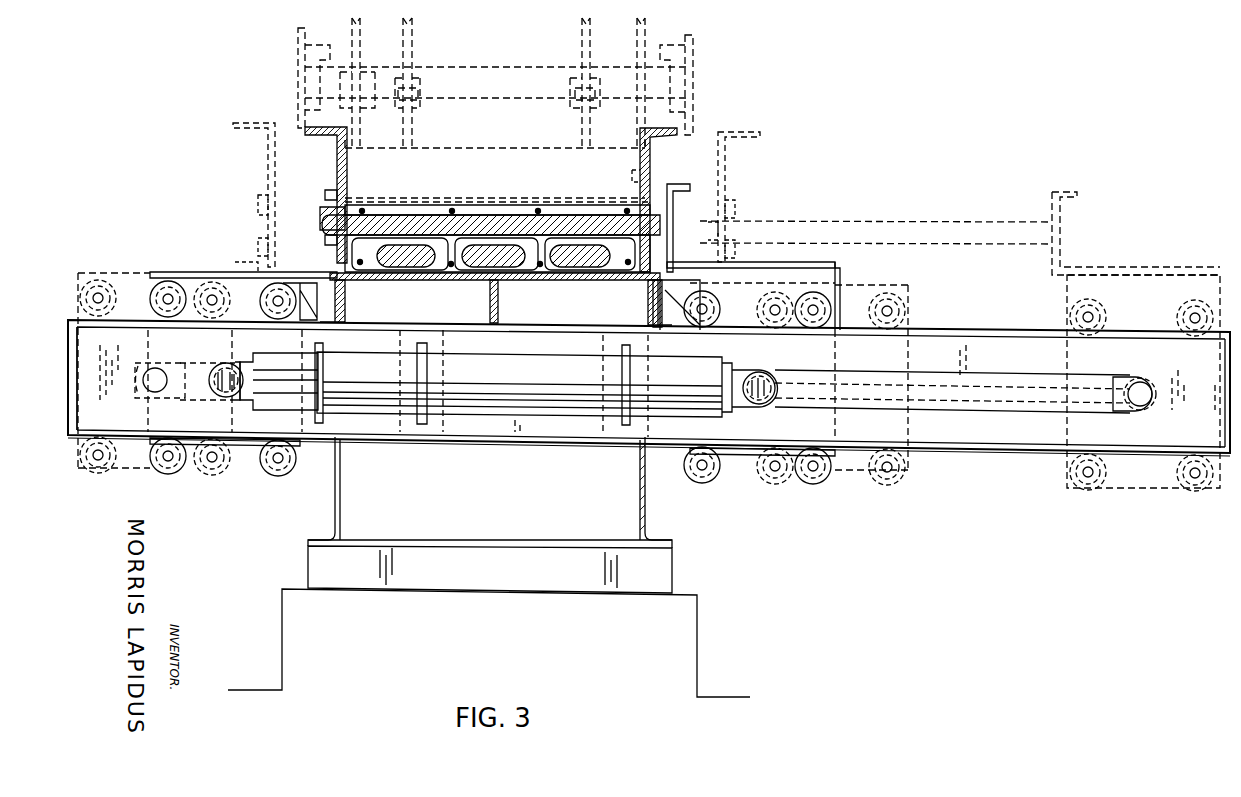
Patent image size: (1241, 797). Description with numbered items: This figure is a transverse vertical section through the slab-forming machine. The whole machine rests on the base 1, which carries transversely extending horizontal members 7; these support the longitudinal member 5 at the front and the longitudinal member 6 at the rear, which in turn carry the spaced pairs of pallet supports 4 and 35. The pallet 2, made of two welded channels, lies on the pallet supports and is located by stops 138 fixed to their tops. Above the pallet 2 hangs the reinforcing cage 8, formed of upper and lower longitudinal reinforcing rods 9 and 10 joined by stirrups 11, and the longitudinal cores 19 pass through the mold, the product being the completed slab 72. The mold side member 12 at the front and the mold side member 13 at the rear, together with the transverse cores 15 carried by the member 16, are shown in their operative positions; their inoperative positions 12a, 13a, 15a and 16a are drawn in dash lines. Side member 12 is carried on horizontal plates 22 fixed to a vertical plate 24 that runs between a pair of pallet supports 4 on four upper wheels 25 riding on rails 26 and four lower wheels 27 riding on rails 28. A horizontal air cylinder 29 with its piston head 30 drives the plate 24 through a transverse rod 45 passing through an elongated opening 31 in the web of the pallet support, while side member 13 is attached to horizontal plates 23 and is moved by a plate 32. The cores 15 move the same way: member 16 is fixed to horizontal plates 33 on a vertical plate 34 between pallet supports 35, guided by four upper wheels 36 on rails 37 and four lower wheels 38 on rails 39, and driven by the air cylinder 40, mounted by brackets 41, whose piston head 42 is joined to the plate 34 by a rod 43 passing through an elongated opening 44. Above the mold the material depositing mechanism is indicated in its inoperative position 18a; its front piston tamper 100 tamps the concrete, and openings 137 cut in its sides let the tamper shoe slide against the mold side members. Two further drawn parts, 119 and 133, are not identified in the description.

The base 1 is at (282, 642).
The pallet 2 is at (338, 303).
The pallet supports 4 is at (95, 430).
The longitudinally extending member 5 is at (335, 498).
The longitudinally extending member 6 is at (648, 505).
The transversely extending members 7 is at (310, 561).
The reinforcing cage 8 is at (412, 280).
The upper reinforcing rods 9 is at (452, 213).
The lower reinforcing rods 10 is at (465, 262).
The stirrups 11 is at (530, 262).
The mold side member 12 is at (337, 143).
The inoperative position of mold side member 12a is at (266, 143).
The mold side member 13 is at (652, 150).
The inoperative position of mold side member 13a is at (727, 153).
The transversely extending cores 15 is at (326, 213).
The inoperative position of cores 15a is at (912, 221).
The core-carrying member 16 is at (674, 188).
The inoperative position of core-carrying member 16a is at (1077, 193).
The inoperative position of material depositing mechanism 18a is at (460, 66).
The longitudinally extending cores 19 is at (575, 272).
The horizontal plates 22 is at (213, 272).
The horizontal plates 23 is at (880, 300).
The vertically disposed plate 24 is at (162, 281).
The wheels 25 is at (283, 293).
The rails 26 is at (132, 300).
The wheels 27 is at (172, 448).
The rails 28 is at (133, 448).
The air cylinder 29 is at (268, 400).
The piston head 30 is at (232, 392).
The elongated opening 31 is at (195, 395).
The plate 32 is at (830, 292).
The horizontal plates 33 is at (740, 262).
The vertically extending plate 34 is at (797, 262).
The pallet supports 35 is at (1040, 433).
The wheels 36 is at (838, 268).
The rails 37 is at (958, 336).
The wheels 38 is at (815, 473).
The rails 39 is at (990, 456).
The air cylinder 40 is at (570, 405).
The brackets 41 is at (425, 426).
The piston head 42 is at (755, 405).
The transversely extending rod 43 is at (760, 405).
The elongated opening 44 is at (948, 406).
The transversely extending rod 45 is at (240, 398).
The completed slab 72 is at (555, 212).
The front piston tamper 100 is at (516, 146).
The bolt 119 is at (328, 194).
The far right carriage 133 is at (1222, 405).
The openings 137 is at (630, 180).
The stops 138 is at (672, 318).